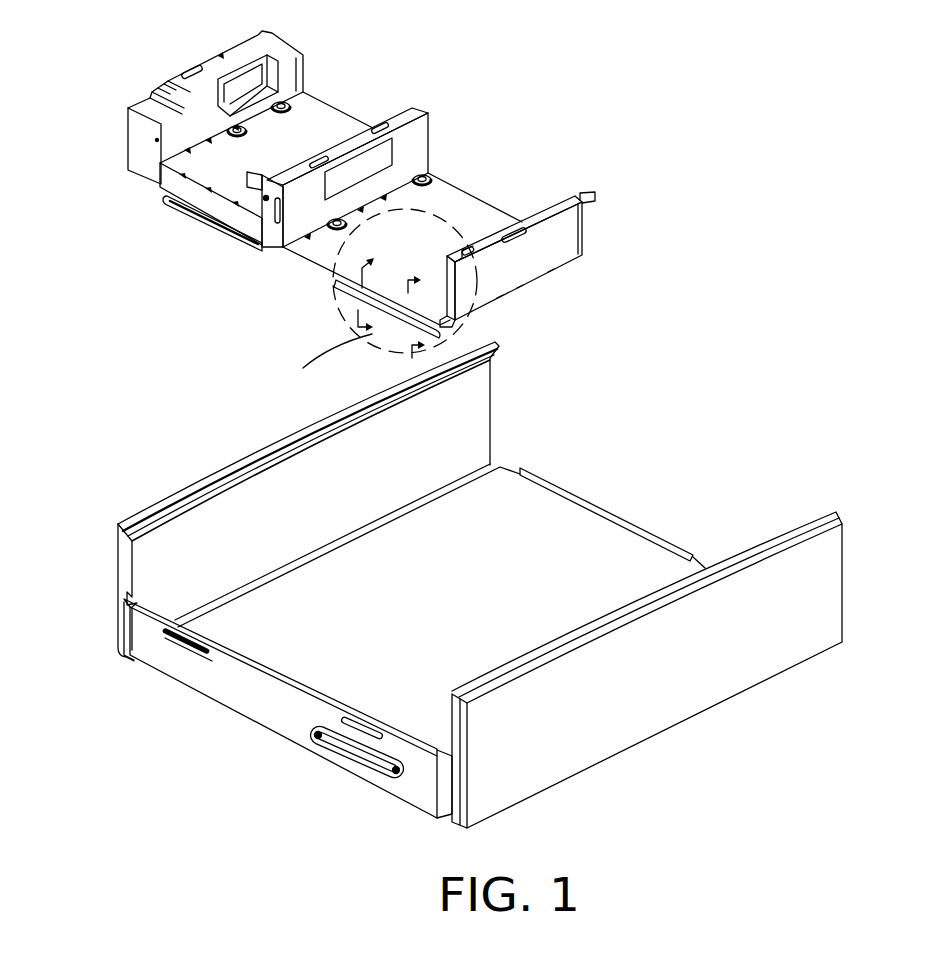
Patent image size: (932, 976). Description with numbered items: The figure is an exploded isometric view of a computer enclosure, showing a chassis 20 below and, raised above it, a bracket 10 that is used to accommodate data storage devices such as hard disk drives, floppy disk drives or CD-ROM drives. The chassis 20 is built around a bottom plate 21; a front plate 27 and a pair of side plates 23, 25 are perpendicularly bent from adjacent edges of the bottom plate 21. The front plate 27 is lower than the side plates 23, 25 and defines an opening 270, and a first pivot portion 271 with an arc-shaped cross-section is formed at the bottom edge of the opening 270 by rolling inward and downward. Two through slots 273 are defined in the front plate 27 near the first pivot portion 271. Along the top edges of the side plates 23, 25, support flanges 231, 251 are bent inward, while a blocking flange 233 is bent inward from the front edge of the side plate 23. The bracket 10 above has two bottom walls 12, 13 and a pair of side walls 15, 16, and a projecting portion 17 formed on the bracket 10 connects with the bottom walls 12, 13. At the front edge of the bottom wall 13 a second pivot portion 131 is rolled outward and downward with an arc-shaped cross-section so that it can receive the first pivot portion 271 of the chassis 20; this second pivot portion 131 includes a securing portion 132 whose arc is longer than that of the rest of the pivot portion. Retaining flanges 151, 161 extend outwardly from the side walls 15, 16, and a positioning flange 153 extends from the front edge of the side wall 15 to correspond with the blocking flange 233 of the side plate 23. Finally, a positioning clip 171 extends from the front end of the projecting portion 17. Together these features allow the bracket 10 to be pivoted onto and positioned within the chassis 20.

The bracket 10 is at (478, 101).
The bottom wall 12 is at (437, 190).
The bottom wall 13 is at (314, 110).
The second pivot portion 131 is at (225, 230).
The securing portion 132 is at (177, 210).
The side wall 15 is at (578, 237).
The retaining flange 151 is at (565, 208).
The positioning flange 153 is at (453, 293).
The side wall 16 is at (297, 73).
The retaining flange 161 is at (245, 57).
The projecting portion 17 is at (410, 108).
The positioning clip 171 is at (273, 247).
The chassis 20 is at (597, 447).
The bottom plate 21 is at (608, 538).
The side plate 23 is at (648, 702).
The support flange 231 is at (822, 513).
The blocking flange 233 is at (468, 813).
The side plate 25 is at (270, 497).
The support flange 251 is at (317, 440).
The front plate 27 is at (250, 702).
The opening 270 is at (438, 738).
The first pivot portion 271 is at (225, 652).
The through slot 273 is at (133, 658).